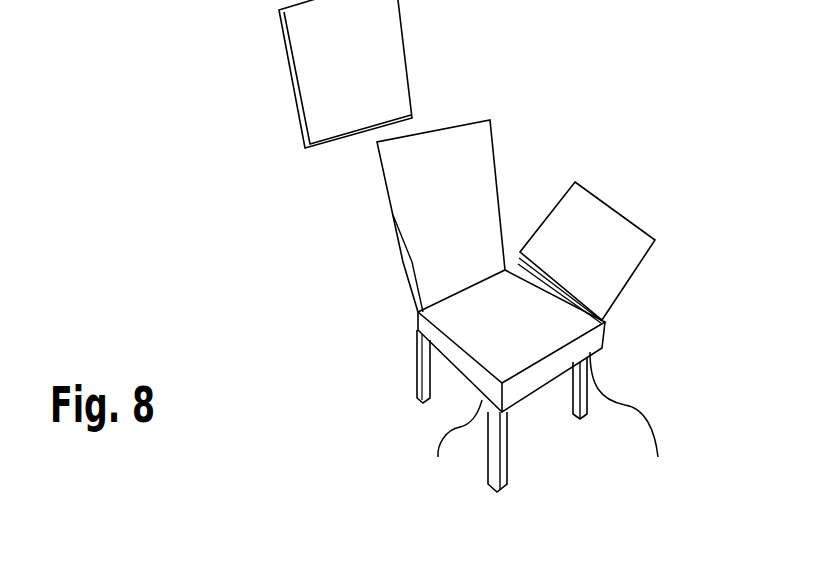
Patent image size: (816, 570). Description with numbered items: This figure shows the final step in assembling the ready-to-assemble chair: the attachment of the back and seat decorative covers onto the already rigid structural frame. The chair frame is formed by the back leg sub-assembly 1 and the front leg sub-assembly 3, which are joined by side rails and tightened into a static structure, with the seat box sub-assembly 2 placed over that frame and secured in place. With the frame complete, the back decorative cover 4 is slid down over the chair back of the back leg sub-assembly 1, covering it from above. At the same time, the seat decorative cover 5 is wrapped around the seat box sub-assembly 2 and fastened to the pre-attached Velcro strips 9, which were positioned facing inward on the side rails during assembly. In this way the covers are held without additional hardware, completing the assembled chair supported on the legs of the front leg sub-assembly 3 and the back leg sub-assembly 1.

The back leg sub-assembly 1 is at (410, 252).
The seat box sub-assembly 2 is at (505, 333).
The front leg sub-assembly 3 is at (573, 415).
The back decorative cover 4 is at (347, 63).
The seat decorative cover 5 is at (592, 222).
The Velcro strips 9 is at (556, 431).